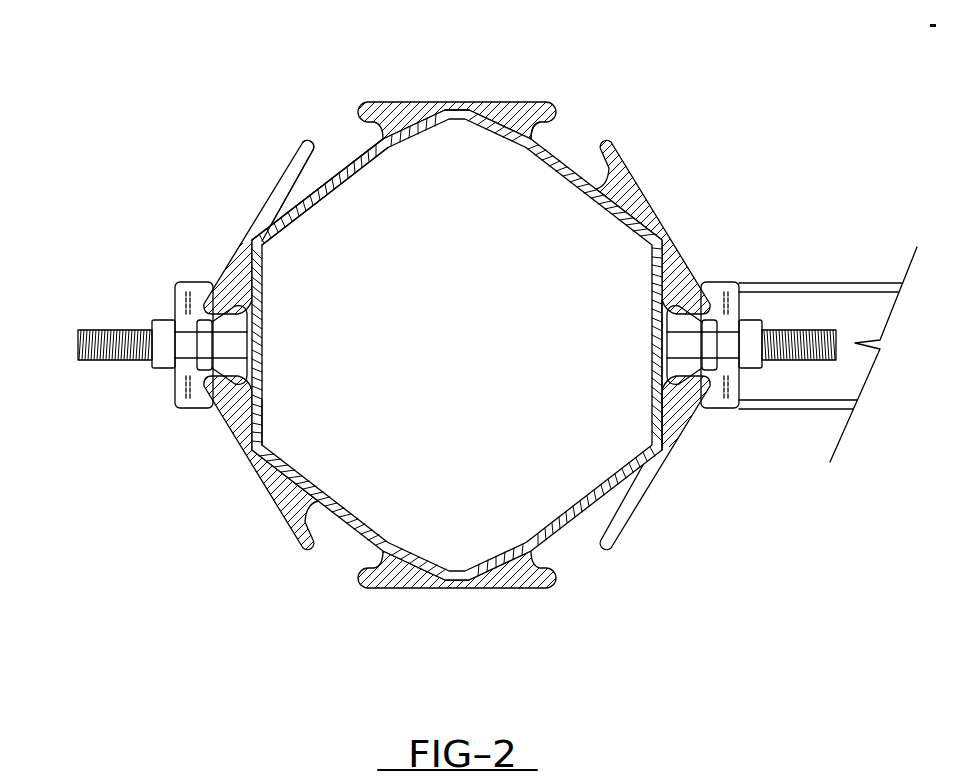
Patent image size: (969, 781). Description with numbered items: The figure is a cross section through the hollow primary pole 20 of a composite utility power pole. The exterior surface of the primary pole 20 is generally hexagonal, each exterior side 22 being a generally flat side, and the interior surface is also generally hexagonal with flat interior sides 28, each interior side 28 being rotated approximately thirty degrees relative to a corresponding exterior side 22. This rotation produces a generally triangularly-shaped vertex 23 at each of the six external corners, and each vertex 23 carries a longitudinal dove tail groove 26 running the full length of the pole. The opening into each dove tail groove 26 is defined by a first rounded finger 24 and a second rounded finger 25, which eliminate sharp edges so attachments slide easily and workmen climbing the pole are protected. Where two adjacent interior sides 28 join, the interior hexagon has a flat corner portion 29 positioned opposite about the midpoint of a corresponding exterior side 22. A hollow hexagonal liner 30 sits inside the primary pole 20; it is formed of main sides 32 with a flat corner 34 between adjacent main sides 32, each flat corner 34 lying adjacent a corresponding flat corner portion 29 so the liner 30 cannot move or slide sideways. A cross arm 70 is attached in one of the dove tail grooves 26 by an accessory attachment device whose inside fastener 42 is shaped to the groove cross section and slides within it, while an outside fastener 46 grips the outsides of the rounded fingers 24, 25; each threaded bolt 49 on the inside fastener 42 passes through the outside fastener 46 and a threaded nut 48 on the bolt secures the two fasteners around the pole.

The primary pole 20 is at (518, 596).
The exterior side 22 is at (462, 100).
The triangularly-shaped vertex 23 is at (350, 163).
The first rounded finger 24 is at (368, 113).
The second rounded finger 25 is at (550, 107).
The dove tail groove 26 is at (342, 550).
The interior side 28 is at (258, 417).
The flat corner portion 29 is at (257, 456).
The liner 30 is at (347, 190).
The main side 32 is at (597, 500).
The flat corner 34 is at (452, 562).
The inside fastener 42 is at (237, 320).
The outside fastener 46 is at (186, 292).
The threaded nut 48 is at (160, 368).
The threaded bolt 49 is at (94, 338).
The cross arm 70 is at (768, 290).